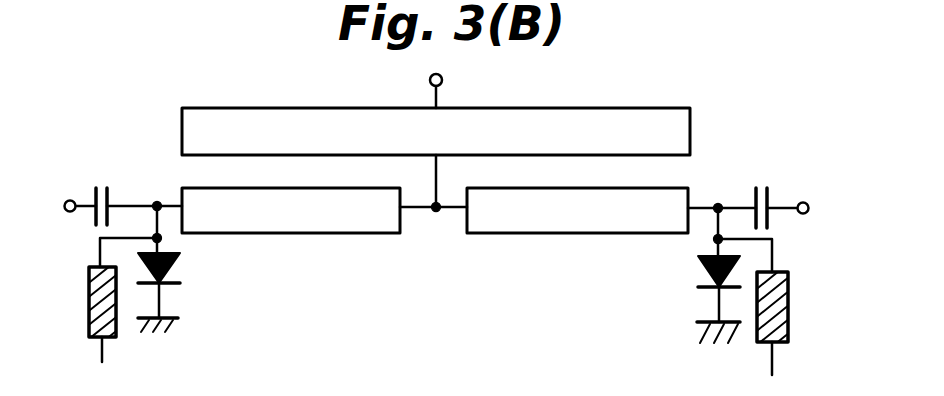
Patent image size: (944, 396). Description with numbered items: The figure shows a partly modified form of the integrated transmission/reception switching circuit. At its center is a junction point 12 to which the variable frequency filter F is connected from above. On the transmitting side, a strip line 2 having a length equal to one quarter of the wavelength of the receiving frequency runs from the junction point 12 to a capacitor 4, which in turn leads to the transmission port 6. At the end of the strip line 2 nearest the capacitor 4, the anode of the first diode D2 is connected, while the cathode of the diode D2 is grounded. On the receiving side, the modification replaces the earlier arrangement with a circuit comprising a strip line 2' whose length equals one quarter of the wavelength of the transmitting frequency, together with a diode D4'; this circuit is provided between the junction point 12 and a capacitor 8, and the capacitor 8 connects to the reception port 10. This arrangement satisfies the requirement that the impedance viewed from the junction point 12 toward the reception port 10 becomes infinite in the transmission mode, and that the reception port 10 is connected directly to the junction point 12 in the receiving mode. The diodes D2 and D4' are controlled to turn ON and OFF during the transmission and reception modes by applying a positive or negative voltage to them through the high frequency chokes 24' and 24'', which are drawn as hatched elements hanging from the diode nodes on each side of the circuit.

The variable frequency filter F is at (690, 127).
The strip line 2' is at (291, 243).
The strip line 2 is at (577, 243).
The junction point 12 is at (436, 212).
The reception port 10 is at (70, 198).
The capacitor 8 is at (104, 190).
The capacitor 4 is at (760, 187).
The transmission port 6 is at (805, 200).
The diode D4' is at (194, 292).
The high frequency choke 24' is at (133, 310).
The first diode D2 is at (703, 262).
The high frequency choke 24'' is at (807, 314).